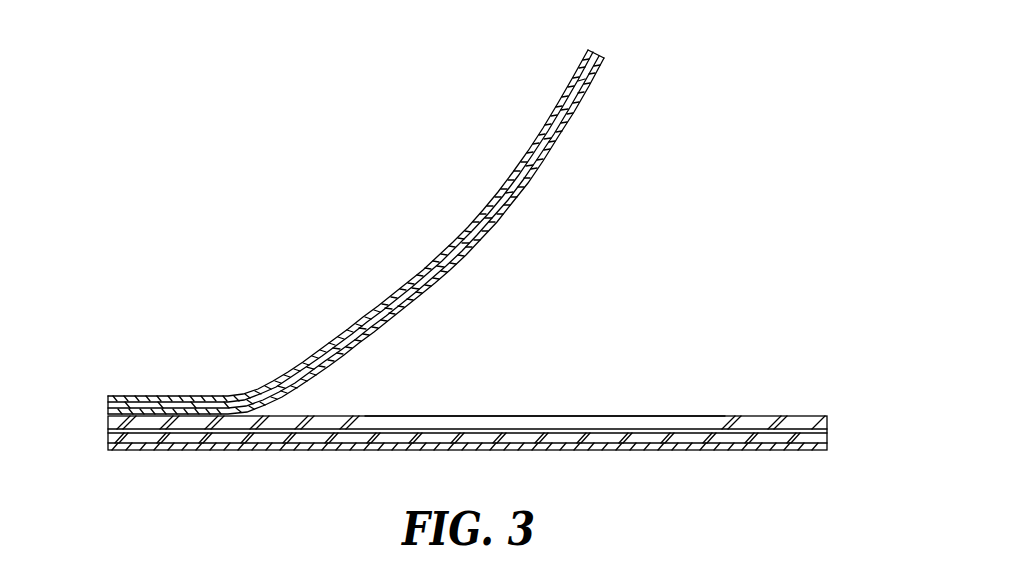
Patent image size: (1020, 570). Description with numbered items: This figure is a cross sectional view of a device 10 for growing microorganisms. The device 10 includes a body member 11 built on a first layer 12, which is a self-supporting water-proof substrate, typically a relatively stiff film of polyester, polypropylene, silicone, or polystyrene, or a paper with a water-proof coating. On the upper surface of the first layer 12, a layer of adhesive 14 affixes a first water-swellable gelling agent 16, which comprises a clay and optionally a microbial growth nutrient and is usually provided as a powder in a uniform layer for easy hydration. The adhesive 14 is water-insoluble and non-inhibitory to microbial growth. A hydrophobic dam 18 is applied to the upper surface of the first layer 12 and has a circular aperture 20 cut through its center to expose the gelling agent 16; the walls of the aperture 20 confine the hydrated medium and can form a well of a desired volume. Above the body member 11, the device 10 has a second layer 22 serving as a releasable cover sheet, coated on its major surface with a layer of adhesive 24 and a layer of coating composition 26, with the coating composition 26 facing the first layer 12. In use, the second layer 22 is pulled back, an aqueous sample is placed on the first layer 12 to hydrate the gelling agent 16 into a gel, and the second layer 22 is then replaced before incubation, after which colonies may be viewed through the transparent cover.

The device 10 is at (782, 150).
The body member 11 is at (840, 413).
The first layer 12 is at (353, 452).
The layer of adhesive 14 is at (108, 440).
The first water-swellable gelling agent 16 is at (535, 431).
The hydrophobic dam 18 is at (770, 422).
The aperture 20 is at (722, 428).
The second layer 22 is at (568, 88).
The layer of adhesive 24 is at (597, 50).
The layer of coating composition 26 is at (577, 100).